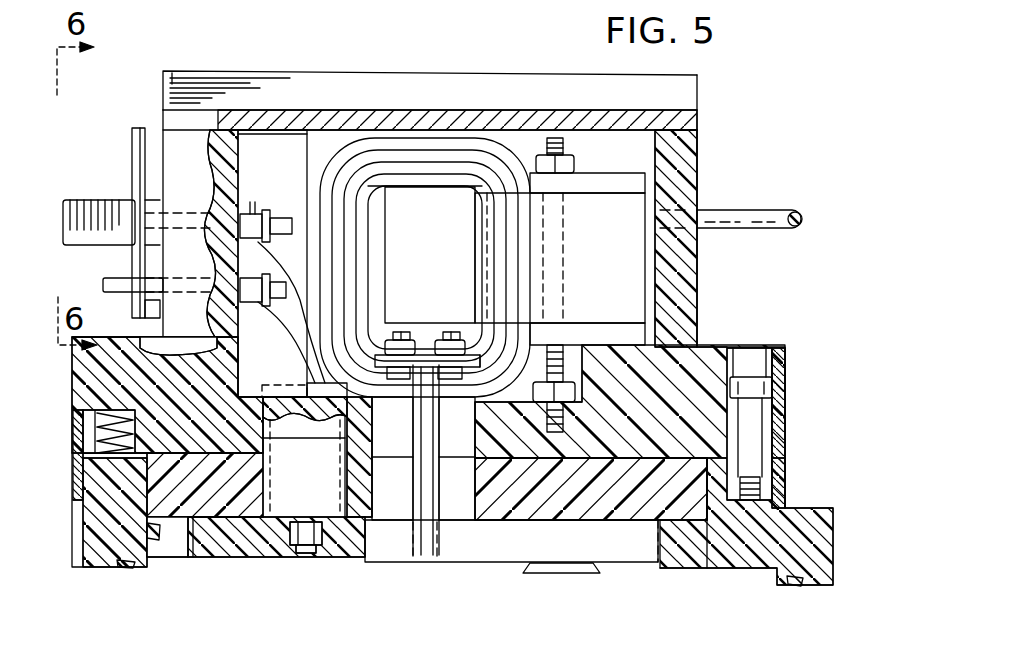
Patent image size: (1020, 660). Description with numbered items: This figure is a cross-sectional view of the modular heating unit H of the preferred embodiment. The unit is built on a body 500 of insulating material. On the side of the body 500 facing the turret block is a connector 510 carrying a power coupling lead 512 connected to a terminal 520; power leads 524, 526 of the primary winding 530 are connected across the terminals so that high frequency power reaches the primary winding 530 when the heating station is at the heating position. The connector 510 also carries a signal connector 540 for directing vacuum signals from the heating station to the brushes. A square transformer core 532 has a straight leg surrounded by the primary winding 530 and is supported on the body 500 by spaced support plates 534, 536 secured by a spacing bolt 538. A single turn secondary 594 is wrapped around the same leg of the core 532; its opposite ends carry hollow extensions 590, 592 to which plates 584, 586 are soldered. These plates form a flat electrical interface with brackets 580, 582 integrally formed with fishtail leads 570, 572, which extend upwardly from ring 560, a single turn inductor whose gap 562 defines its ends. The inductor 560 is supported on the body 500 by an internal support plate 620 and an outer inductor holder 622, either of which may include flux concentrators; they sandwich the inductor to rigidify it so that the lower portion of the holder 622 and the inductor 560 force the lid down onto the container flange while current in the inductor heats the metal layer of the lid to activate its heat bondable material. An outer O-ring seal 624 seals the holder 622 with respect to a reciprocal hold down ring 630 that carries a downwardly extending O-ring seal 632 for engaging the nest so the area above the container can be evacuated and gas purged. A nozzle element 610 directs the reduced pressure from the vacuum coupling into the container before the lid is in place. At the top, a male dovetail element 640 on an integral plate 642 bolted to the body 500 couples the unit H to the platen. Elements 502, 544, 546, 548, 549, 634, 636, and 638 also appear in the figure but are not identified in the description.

The body 500 is at (700, 292).
The shaft 502 is at (772, 212).
The connector 510 is at (130, 146).
The power coupling lead 512 is at (110, 200).
The terminal 520 is at (255, 190).
The power lead 524 is at (315, 165).
The power lead 526 is at (364, 252).
The primary winding 530 is at (470, 145).
The square transformer core 532 is at (665, 258).
The support plate 534 is at (603, 175).
The support plate 536 is at (698, 347).
The spacing bolt 538 is at (560, 143).
The signal connector 540 is at (116, 280).
The terminal lead 544 is at (300, 337).
The terminal lead 546 is at (305, 368).
The sleeve 548 is at (350, 520).
The nut 549 is at (300, 553).
The ring 560 is at (190, 560).
The gap 562 is at (427, 548).
The fishtail lead 570 is at (347, 486).
The fishtail lead 572 is at (440, 488).
The bracket 580 is at (347, 438).
The bracket 582 is at (540, 422).
The plate 584 is at (372, 335).
The plate 586 is at (490, 338).
The hollow extension 590 is at (398, 338).
The hollow extension 592 is at (452, 335).
The single turn secondary 594 is at (420, 180).
The nozzle element 610 is at (573, 575).
The internal support plate 620 is at (248, 552).
The outer inductor holder 622 is at (165, 557).
The outer O-ring seal 624 is at (715, 550).
The reciprocal hold down ring 630 is at (97, 568).
The O-ring seal 632 is at (795, 587).
The bolt bore 634 is at (790, 452).
The spring 636 is at (125, 410).
The bolt 638 is at (760, 377).
The male dovetail element 640 is at (443, 82).
The integral plate 642 is at (699, 118).
The heating unit H is at (702, 158).